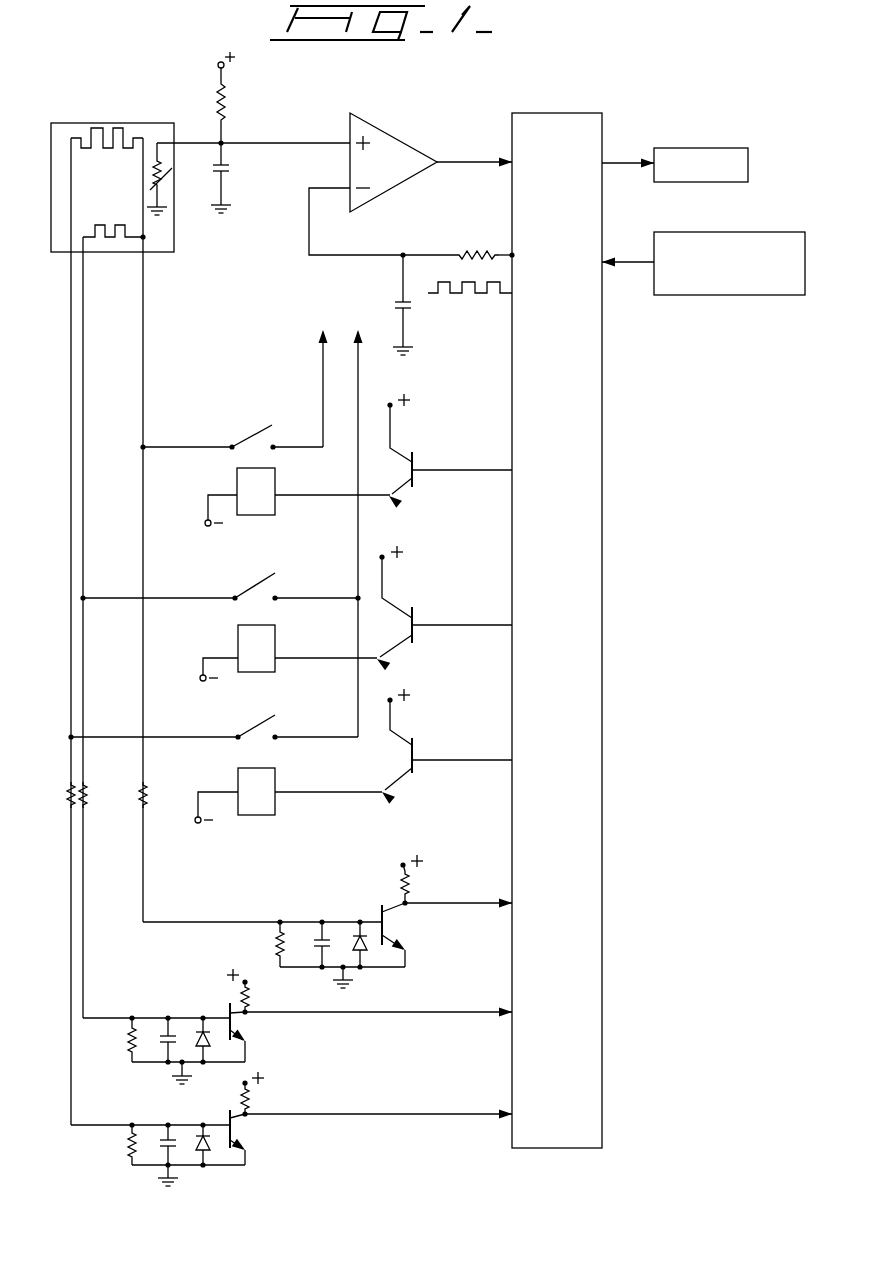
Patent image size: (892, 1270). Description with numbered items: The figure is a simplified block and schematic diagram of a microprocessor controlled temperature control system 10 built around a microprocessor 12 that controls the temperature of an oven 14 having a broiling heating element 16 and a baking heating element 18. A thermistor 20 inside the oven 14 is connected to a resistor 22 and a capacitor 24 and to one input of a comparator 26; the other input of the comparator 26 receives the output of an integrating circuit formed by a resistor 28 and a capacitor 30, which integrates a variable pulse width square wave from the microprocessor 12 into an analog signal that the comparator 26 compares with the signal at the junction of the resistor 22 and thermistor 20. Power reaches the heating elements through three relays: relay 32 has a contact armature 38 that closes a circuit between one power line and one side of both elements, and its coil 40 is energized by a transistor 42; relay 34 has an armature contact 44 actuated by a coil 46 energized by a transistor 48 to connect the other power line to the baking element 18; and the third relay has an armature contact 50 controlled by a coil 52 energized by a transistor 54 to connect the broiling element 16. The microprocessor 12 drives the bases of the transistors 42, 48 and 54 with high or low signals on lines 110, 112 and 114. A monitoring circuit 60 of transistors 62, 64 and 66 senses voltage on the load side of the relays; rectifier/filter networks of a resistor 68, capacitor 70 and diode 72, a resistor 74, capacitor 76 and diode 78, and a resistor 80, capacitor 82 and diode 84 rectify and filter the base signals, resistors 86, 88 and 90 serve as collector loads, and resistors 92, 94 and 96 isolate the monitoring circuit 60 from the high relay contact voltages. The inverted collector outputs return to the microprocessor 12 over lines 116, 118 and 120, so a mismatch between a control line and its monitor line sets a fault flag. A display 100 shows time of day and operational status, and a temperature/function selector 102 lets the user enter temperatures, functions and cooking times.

The temperature control system 10 is at (630, 631).
The microprocessor 12 is at (590, 746).
The oven 14 is at (118, 123).
The broiling heating element 16 is at (95, 128).
The baking heating element 18 is at (112, 243).
The thermistor 20 is at (164, 184).
The resistor 22 is at (226, 97).
The capacitor 24 is at (230, 181).
The comparator 26 is at (387, 152).
The resistor 28 is at (473, 254).
The capacitor 30 is at (396, 303).
The relay 32 is at (231, 408).
The relay 34 is at (220, 570).
The contact armature 38 is at (249, 436).
The coil 40 is at (270, 512).
The transistor 42 is at (415, 483).
The armature contact 44 is at (265, 577).
The coil 46 is at (270, 638).
The transistor 48 is at (415, 618).
The armature contact 50 is at (265, 713).
The coil 52 is at (270, 781).
The transistor 54 is at (415, 746).
The monitoring circuit 60 is at (56, 1072).
The transistor 62 is at (380, 916).
The transistor 64 is at (232, 1007).
The transistor 66 is at (234, 1103).
The resistor 68 is at (278, 936).
The capacitor 70 is at (322, 931).
The diode 72 is at (380, 956).
The resistor 74 is at (130, 1036).
The capacitor 76 is at (163, 1046).
The diode 78 is at (206, 1048).
The resistor 80 is at (130, 1136).
The capacitor 82 is at (162, 1149).
The diode 84 is at (210, 1156).
The resistor 86 is at (413, 883).
The resistor 88 is at (250, 993).
The resistor 90 is at (250, 1099).
The resistor 92 is at (146, 797).
The resistor 94 is at (86, 791).
The resistor 96 is at (69, 795).
The display 100 is at (748, 162).
The temperature/function selector 102 is at (780, 232).
The line 110 is at (458, 470).
The line 112 is at (468, 625).
The line 114 is at (468, 760).
The line 116 is at (462, 903).
The line 118 is at (462, 1012).
The line 120 is at (413, 1117).